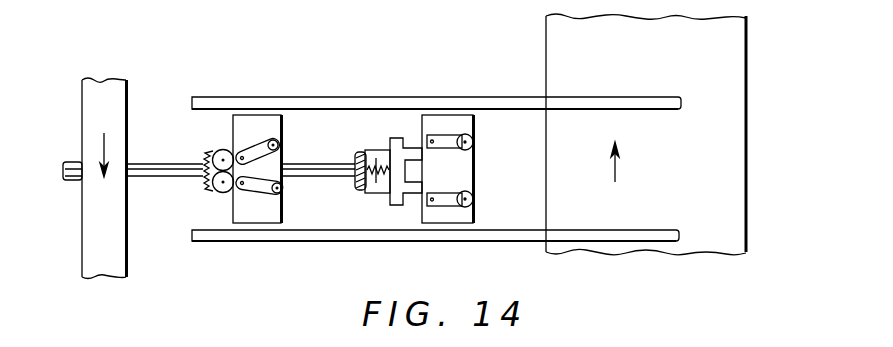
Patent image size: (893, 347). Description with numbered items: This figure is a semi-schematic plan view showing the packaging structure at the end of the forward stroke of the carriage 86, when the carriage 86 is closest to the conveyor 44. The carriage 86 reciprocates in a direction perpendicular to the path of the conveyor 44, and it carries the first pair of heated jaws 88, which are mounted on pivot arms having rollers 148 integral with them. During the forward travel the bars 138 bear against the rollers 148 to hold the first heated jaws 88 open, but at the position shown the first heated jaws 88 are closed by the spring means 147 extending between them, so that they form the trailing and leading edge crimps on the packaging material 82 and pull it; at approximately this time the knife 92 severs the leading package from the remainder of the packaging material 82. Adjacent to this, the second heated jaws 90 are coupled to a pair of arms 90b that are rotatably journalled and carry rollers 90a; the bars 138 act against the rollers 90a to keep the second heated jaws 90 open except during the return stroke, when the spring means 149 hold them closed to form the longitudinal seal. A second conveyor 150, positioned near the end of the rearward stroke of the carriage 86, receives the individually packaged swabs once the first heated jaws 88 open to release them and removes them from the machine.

The conveyor 44 is at (87, 188).
The packaging material 82 is at (139, 164).
The second heated jaws 90 is at (218, 148).
The spring means 149 is at (198, 173).
The arms 90b is at (258, 143).
The rollers 90a is at (280, 148).
The bars 138 is at (397, 98).
The spring means 147 is at (355, 178).
The knife 92 is at (380, 150).
The first pair of heated jaws 88 is at (380, 188).
The carriage 86 is at (450, 125).
The rollers 148 is at (475, 142).
The second conveyor 150 is at (716, 76).